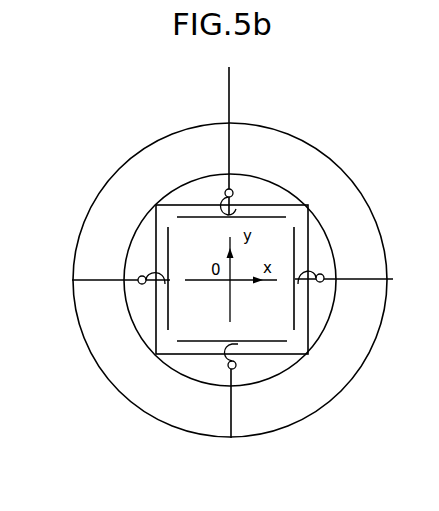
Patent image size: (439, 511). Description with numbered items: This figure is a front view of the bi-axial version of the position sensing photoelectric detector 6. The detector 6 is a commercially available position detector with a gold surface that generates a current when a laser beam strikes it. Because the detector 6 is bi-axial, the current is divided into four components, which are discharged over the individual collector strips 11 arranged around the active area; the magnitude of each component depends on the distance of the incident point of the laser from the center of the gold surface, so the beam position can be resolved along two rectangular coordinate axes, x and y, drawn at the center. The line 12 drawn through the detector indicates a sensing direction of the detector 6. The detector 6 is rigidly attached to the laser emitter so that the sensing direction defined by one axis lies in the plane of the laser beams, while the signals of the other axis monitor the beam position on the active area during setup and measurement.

The bi-axial position sensing photoelectric detector 6 is at (362, 187).
The collector strips 11 is at (266, 216).
The reference axis line 12 is at (232, 251).